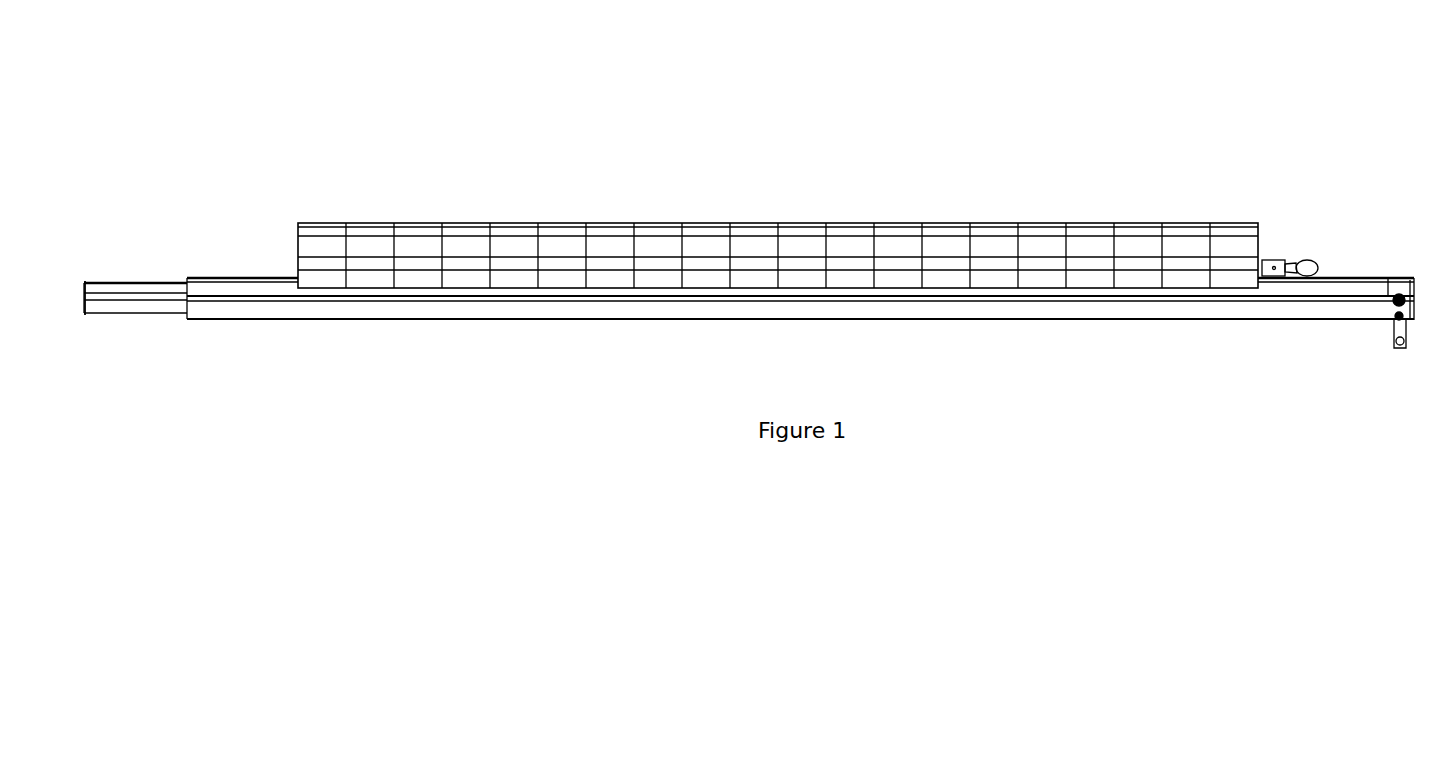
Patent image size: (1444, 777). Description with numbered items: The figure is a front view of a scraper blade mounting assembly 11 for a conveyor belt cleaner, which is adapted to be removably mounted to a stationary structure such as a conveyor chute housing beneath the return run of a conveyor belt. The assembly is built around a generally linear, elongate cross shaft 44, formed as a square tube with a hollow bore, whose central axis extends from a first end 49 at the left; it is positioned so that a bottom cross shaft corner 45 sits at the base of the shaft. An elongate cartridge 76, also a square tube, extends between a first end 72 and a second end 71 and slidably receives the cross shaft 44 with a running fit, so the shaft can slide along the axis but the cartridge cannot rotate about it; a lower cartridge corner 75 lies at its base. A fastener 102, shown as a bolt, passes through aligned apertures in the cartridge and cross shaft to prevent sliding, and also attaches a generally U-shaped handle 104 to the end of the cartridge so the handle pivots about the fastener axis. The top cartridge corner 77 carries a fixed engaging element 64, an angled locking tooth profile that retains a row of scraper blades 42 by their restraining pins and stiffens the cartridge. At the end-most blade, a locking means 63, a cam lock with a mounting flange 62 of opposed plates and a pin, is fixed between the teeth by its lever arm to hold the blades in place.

The scraper blade mounting assembly 11 is at (1101, 395).
The scraper blade 42 is at (418, 237).
The cross shaft 44 is at (152, 307).
The bottom cross shaft corner 45 is at (164, 313).
The first end 49 is at (85, 283).
The mounting flange 62 is at (1272, 255).
The locking means 63 is at (1298, 268).
The engaging element 64 is at (1290, 272).
The second end 71 is at (186, 280).
The first end 72 is at (1414, 280).
The lower cartridge corner 75 is at (242, 320).
The cartridge 76 is at (237, 283).
The top cartridge corner 77 is at (1388, 278).
The fastener 102 is at (1403, 322).
The handle 104 is at (1398, 340).